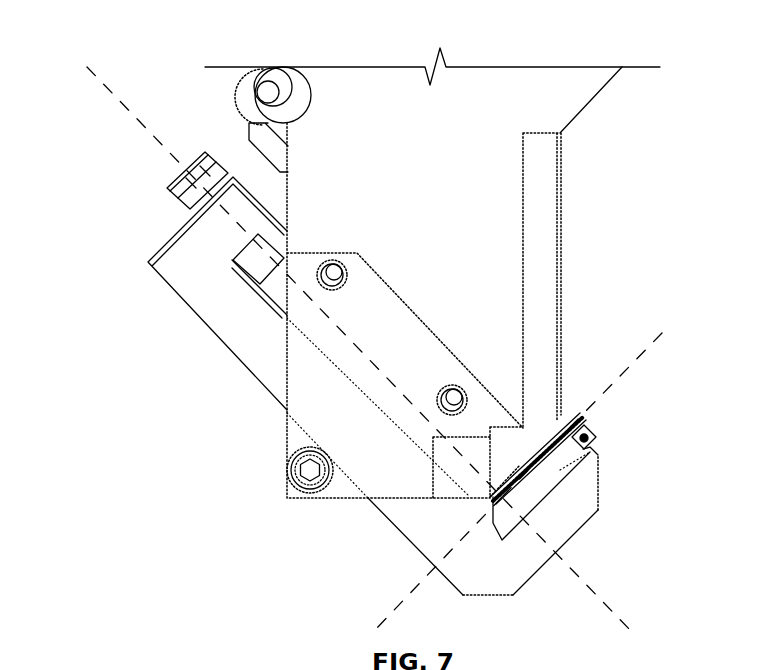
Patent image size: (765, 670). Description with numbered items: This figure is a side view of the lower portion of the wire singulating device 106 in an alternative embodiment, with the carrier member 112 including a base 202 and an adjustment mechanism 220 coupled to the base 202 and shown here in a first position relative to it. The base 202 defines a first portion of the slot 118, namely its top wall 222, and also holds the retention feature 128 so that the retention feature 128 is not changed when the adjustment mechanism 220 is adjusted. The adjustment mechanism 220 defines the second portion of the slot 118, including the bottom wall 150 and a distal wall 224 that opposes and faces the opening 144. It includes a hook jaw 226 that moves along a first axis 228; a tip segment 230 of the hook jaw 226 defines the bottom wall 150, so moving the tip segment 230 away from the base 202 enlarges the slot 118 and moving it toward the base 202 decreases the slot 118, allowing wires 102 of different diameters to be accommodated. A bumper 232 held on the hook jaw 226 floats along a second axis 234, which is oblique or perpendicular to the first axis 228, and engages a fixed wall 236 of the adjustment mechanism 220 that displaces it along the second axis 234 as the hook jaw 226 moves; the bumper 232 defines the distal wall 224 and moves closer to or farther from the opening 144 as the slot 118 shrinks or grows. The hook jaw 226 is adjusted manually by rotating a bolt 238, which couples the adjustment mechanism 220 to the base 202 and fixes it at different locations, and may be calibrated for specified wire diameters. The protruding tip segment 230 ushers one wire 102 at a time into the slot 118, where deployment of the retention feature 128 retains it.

The wire 102 is at (598, 469).
The wire singulating device 106 is at (660, 91).
The carrier member 112 is at (452, 118).
The slot 118 is at (585, 437).
The retention feature 128 is at (562, 440).
The opening 144 is at (597, 448).
The bottom wall 150 is at (568, 470).
The base 202 is at (505, 198).
The adjustment mechanism 220 is at (165, 242).
The top wall 222 is at (548, 432).
The distal wall 224 is at (547, 473).
The hook jaw 226 is at (243, 327).
The first axis 228 is at (137, 117).
The tip segment 230 is at (585, 480).
The bumper 232 is at (523, 500).
The second axis 234 is at (400, 603).
The fixed wall 236 is at (492, 510).
The bolt 238 is at (220, 163).